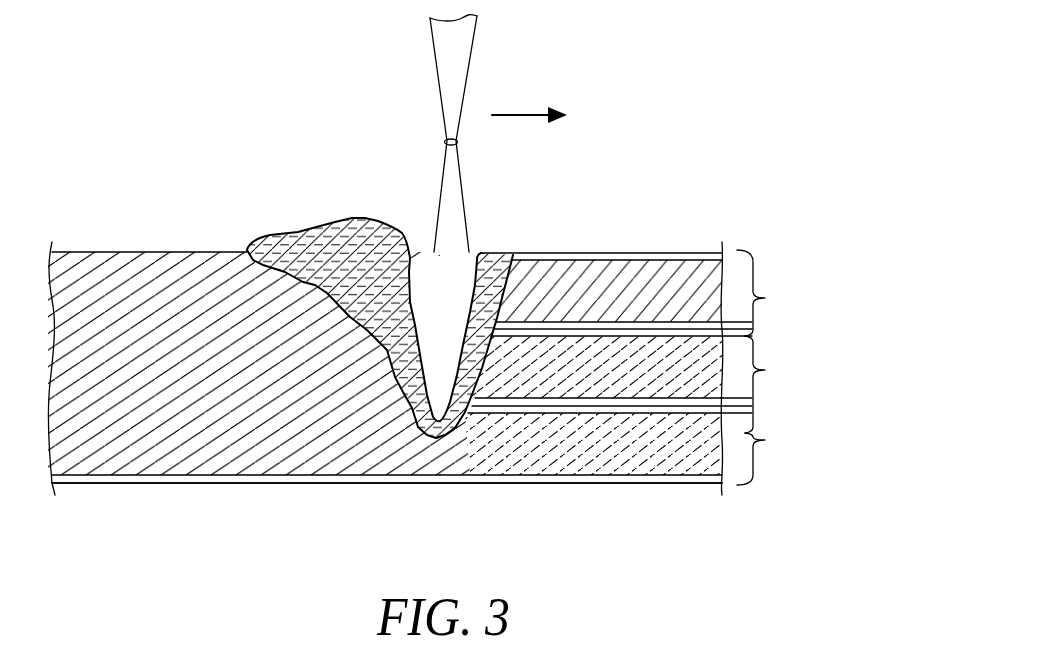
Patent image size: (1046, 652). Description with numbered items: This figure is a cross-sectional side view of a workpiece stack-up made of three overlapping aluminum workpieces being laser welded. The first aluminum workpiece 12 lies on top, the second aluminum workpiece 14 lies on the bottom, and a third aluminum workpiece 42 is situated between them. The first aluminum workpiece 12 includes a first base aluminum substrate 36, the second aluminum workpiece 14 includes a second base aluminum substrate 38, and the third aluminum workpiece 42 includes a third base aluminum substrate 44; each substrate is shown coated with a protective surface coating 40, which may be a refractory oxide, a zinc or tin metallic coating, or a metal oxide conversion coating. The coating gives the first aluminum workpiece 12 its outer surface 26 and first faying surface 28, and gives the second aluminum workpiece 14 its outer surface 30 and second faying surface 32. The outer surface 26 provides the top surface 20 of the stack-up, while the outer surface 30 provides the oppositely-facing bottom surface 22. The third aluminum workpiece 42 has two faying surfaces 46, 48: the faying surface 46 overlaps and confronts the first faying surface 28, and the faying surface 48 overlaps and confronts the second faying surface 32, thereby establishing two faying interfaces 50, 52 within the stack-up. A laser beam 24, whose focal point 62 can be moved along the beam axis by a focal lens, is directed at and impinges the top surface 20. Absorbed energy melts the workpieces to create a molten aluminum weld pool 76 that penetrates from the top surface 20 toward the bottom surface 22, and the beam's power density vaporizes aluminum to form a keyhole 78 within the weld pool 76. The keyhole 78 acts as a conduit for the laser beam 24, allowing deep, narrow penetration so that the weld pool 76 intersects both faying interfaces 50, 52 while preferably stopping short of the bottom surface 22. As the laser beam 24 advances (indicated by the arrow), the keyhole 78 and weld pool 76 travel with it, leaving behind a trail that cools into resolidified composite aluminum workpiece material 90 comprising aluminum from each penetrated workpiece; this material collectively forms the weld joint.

The first aluminum workpiece 12 is at (765, 298).
The second aluminum workpiece 14 is at (765, 440).
The top surface 20 is at (590, 245).
The bottom surface 22 is at (552, 497).
The laser beam 24 is at (434, 72).
The outer surface 26 is at (648, 252).
The first faying surface 28 is at (537, 330).
The outer surface 30 is at (637, 483).
The second faying surface 32 is at (543, 405).
The first base aluminum substrate 36 is at (703, 292).
The second base aluminum substrate 38 is at (703, 445).
The protective surface coating 40 is at (730, 252).
The third aluminum workpiece 42 is at (765, 370).
The third base aluminum substrate 44 is at (703, 370).
The faying surface 46 is at (579, 331).
The faying surface 48 is at (500, 407).
The faying interface 50 is at (522, 310).
The faying interface 52 is at (490, 425).
The focal point 62 is at (447, 139).
The molten aluminum weld pool 76 is at (333, 237).
The keyhole 78 is at (443, 268).
The resolidified composite aluminum workpiece material 90 is at (222, 258).